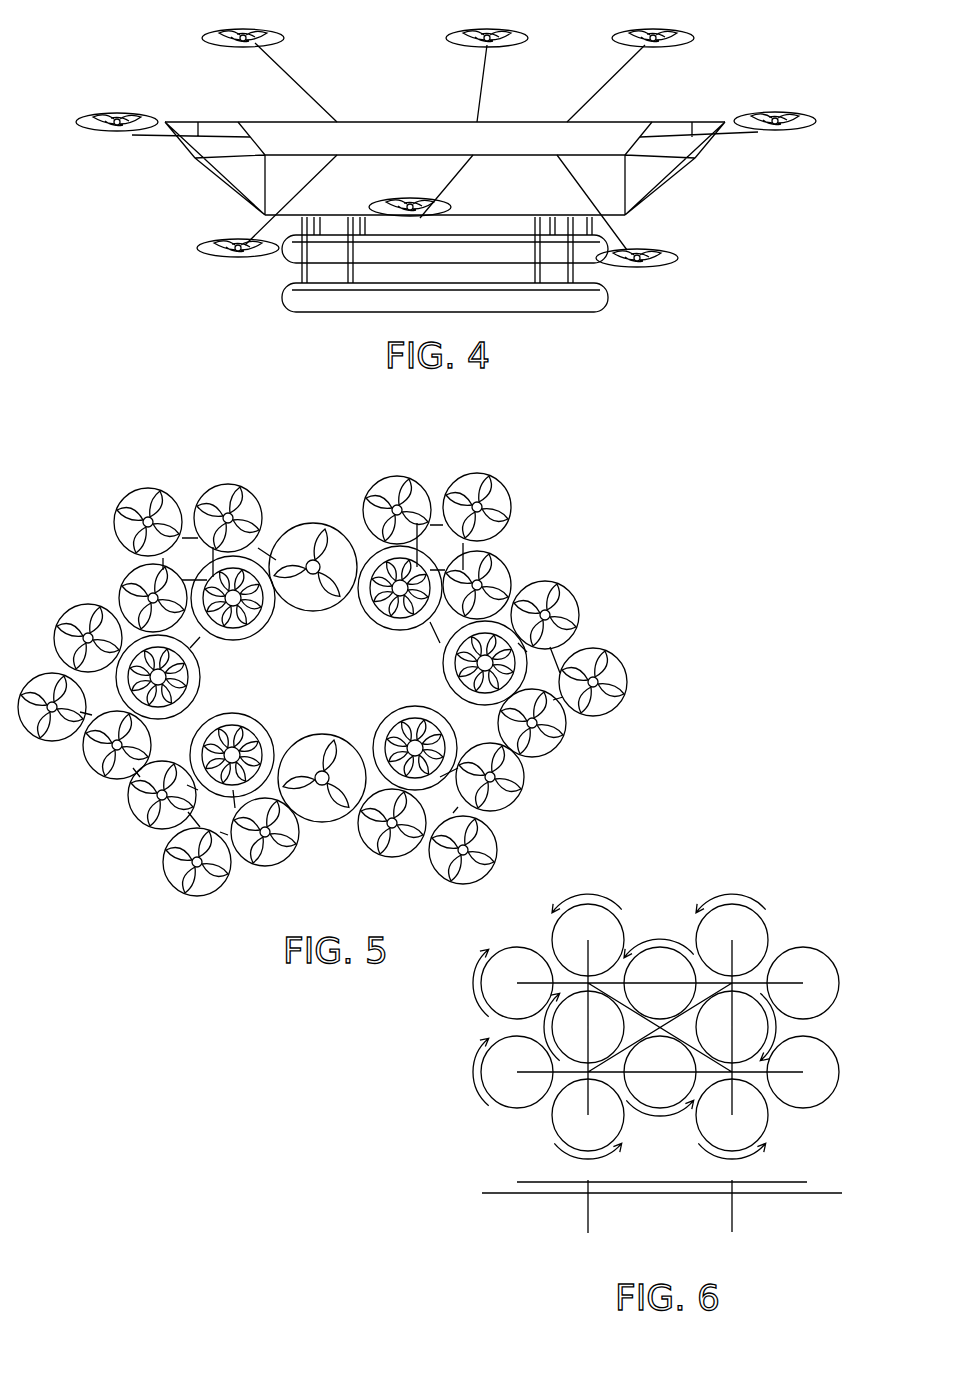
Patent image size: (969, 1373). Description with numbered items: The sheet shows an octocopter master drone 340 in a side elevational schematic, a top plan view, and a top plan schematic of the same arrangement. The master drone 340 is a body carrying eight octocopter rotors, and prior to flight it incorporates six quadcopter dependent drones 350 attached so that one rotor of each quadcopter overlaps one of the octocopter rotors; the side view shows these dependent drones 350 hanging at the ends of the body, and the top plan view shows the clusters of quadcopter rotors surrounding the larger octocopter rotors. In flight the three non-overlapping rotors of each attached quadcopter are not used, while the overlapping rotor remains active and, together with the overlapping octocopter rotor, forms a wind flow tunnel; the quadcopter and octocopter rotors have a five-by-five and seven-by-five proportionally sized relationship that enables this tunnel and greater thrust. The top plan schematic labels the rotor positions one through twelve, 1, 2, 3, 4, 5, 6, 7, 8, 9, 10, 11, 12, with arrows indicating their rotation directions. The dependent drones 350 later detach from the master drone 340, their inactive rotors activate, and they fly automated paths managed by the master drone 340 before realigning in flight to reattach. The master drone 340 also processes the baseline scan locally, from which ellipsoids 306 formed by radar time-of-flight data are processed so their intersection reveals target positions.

In FIG. 4, the master drone 340 is at (750, 70).
In FIG. 5, the master drone 340 is at (592, 543).
In FIG. 4, the dependent drones 350 is at (88, 135).
In FIG. 5, the dependent drones 350 is at (263, 464).
In FIG. 6, the ellipsoids 306 is at (790, 967).
In FIG. 6, the rotor 1 is at (660, 979).
In FIG. 6, the rotor 2 is at (588, 935).
In FIG. 6, the rotor 3 is at (732, 935).
In FIG. 6, the rotor 4 is at (584, 1027).
In FIG. 6, the rotor 5 is at (660, 1076).
In FIG. 6, the rotor 6 is at (736, 1027).
In FIG. 6, the rotor 7 is at (588, 1119).
In FIG. 6, the rotor 8 is at (732, 1119).
In FIG. 6, the rotor 9 is at (803, 983).
In FIG. 6, the rotor 10 is at (803, 1072).
In FIG. 6, the rotor 11 is at (513, 983).
In FIG. 6, the rotor 12 is at (513, 1072).